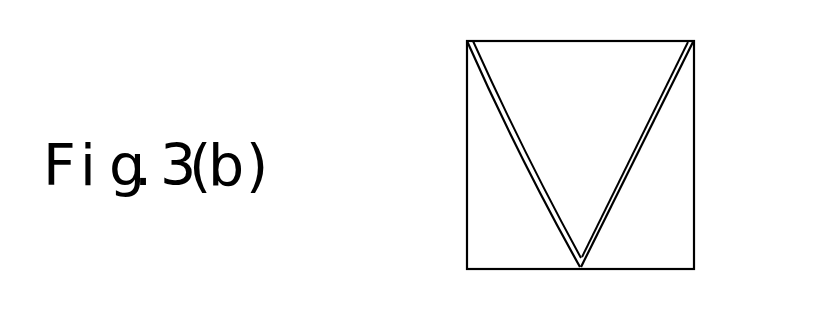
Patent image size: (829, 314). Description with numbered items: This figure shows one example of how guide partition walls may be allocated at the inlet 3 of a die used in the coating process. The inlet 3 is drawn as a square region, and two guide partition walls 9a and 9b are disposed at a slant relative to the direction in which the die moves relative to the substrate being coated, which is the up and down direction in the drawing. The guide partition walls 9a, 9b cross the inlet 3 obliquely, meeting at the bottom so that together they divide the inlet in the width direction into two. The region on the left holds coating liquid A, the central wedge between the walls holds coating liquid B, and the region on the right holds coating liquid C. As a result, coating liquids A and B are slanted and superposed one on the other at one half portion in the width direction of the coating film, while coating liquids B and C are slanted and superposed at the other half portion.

The inlet 3 is at (695, 89).
The guide partition wall 9a is at (559, 221).
The guide partition wall 9b is at (606, 222).
The coating liquid A is at (483, 157).
The coating liquid B is at (519, 93).
The coating liquid C is at (680, 156).